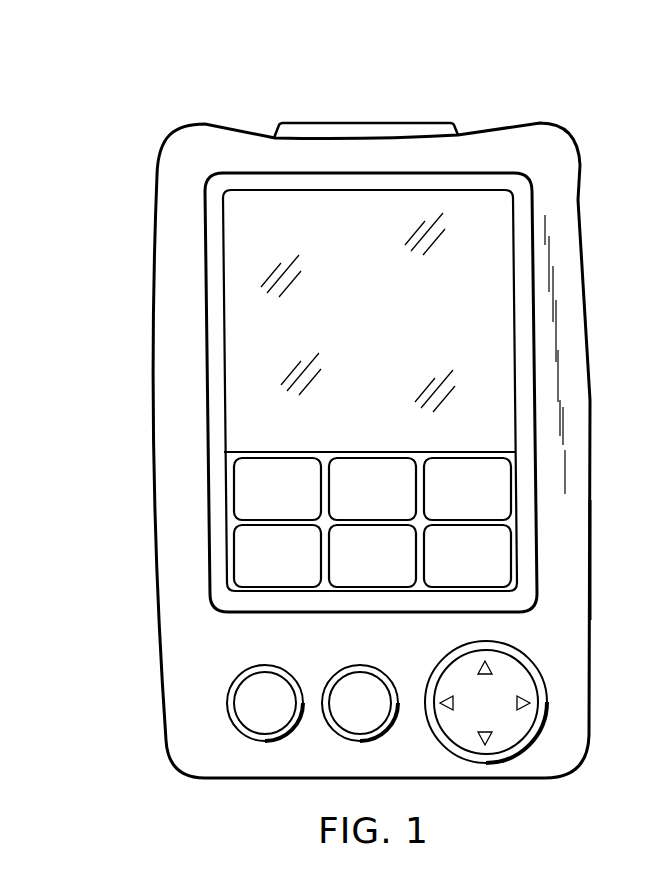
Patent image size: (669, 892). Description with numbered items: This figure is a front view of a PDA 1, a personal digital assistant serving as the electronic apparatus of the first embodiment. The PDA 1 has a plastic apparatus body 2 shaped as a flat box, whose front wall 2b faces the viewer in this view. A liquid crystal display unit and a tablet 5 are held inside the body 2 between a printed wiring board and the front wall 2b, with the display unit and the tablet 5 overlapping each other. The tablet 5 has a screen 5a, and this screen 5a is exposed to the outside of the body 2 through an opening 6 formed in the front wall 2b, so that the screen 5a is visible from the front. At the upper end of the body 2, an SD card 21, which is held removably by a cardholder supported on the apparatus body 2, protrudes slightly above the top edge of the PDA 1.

The PDA 1 is at (369, 402).
The apparatus body 2 is at (163, 411).
The front wall 2b is at (563, 560).
The tablet 5 is at (240, 227).
The screen 5a is at (358, 312).
The opening 6 is at (532, 242).
The SD card 21 is at (370, 132).